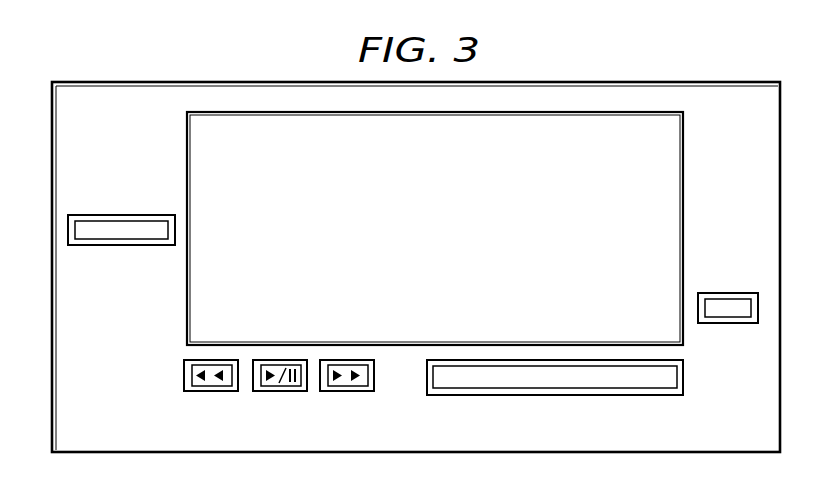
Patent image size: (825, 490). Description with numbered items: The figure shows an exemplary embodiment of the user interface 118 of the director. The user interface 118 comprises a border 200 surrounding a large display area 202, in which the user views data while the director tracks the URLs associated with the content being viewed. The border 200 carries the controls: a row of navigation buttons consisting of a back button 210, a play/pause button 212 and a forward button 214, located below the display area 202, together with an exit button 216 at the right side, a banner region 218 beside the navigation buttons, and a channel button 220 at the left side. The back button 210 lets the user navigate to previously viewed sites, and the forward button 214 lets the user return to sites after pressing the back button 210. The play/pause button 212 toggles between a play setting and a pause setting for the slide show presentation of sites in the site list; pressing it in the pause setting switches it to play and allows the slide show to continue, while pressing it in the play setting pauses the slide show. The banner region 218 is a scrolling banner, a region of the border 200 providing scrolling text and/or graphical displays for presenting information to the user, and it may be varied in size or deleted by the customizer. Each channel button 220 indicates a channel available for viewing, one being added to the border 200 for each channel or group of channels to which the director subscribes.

The user interface 118 is at (566, 69).
The border 200 is at (273, 82).
The display area 202 is at (448, 232).
The back button 210 is at (212, 391).
The play/pause button 212 is at (278, 391).
The forward button 214 is at (346, 391).
The exit button 216 is at (730, 291).
The banner region 218 is at (553, 395).
The channel button 220 is at (122, 212).